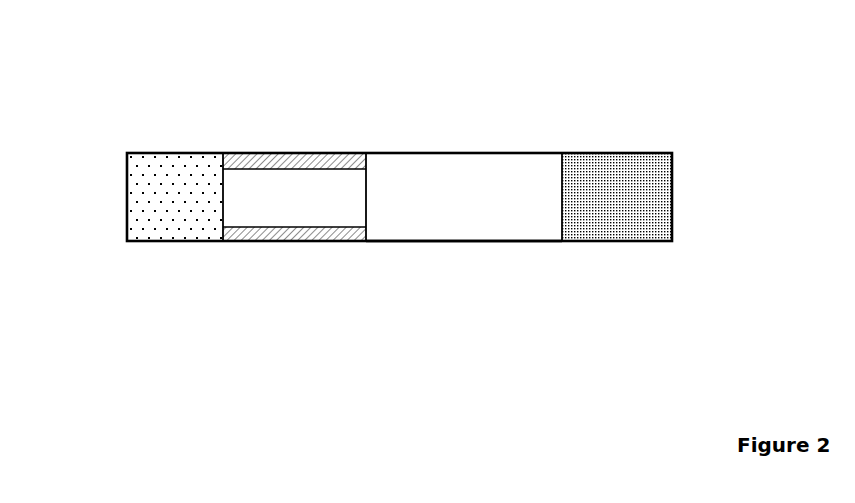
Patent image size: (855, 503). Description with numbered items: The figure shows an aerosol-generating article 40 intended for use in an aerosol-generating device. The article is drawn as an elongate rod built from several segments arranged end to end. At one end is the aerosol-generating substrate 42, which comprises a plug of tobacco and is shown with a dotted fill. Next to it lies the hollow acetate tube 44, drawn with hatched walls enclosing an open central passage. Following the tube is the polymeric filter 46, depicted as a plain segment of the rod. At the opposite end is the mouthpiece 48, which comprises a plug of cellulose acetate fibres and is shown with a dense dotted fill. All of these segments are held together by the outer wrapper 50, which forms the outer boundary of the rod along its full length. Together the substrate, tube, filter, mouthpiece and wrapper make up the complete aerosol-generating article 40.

The aerosol-generating article 40 is at (536, 122).
The aerosol-generating substrate 42 is at (147, 184).
The hollow acetate tube 44 is at (280, 237).
The polymeric filter 46 is at (437, 190).
The mouthpiece 48 is at (646, 204).
The outer wrapper 50 is at (532, 241).